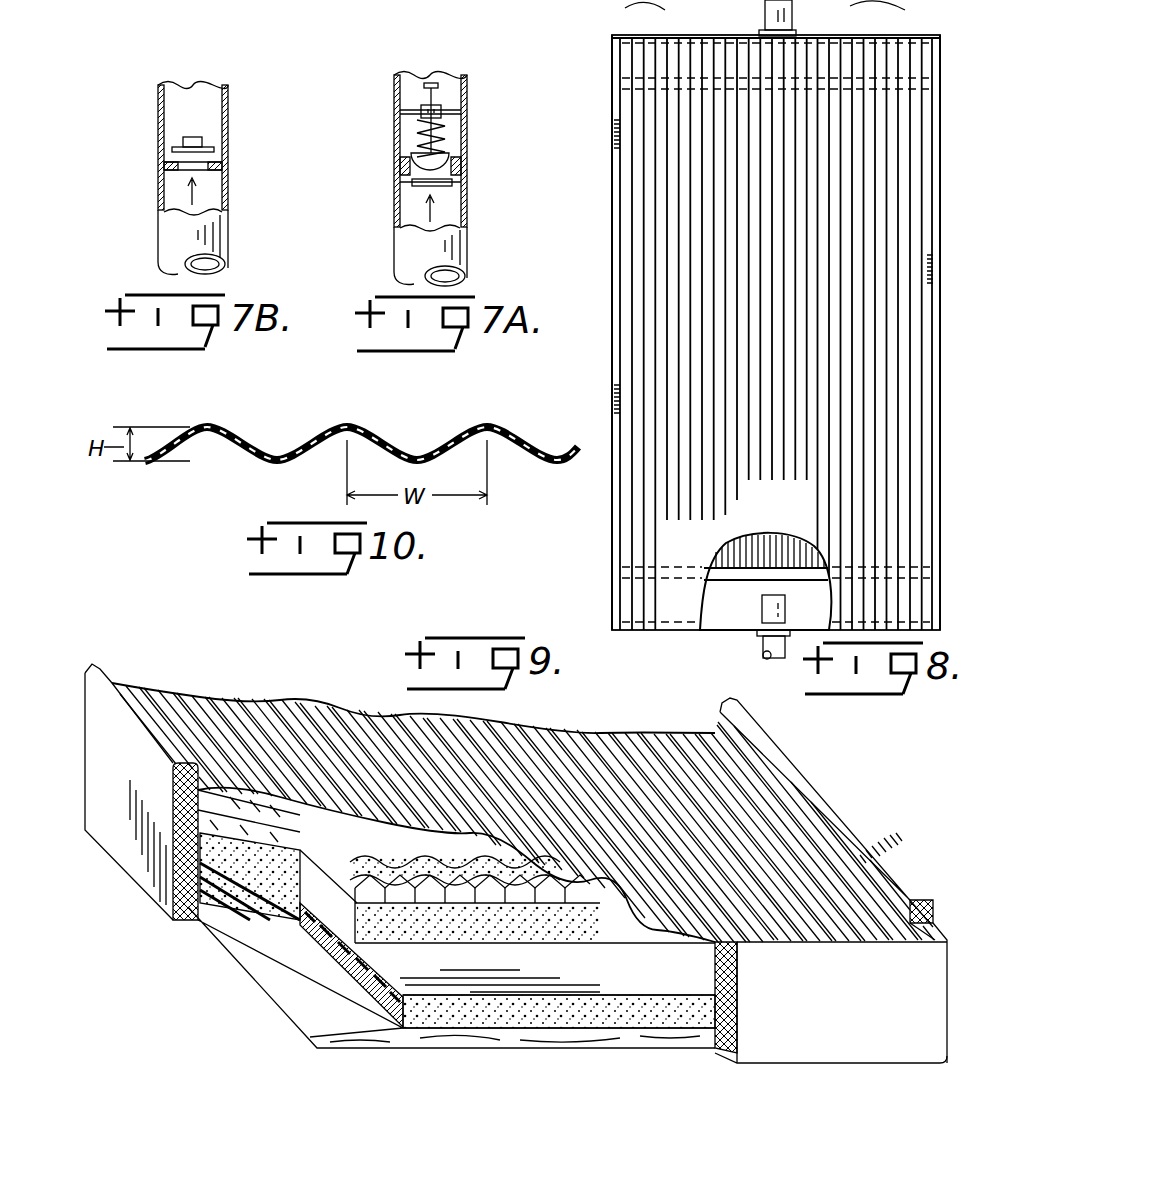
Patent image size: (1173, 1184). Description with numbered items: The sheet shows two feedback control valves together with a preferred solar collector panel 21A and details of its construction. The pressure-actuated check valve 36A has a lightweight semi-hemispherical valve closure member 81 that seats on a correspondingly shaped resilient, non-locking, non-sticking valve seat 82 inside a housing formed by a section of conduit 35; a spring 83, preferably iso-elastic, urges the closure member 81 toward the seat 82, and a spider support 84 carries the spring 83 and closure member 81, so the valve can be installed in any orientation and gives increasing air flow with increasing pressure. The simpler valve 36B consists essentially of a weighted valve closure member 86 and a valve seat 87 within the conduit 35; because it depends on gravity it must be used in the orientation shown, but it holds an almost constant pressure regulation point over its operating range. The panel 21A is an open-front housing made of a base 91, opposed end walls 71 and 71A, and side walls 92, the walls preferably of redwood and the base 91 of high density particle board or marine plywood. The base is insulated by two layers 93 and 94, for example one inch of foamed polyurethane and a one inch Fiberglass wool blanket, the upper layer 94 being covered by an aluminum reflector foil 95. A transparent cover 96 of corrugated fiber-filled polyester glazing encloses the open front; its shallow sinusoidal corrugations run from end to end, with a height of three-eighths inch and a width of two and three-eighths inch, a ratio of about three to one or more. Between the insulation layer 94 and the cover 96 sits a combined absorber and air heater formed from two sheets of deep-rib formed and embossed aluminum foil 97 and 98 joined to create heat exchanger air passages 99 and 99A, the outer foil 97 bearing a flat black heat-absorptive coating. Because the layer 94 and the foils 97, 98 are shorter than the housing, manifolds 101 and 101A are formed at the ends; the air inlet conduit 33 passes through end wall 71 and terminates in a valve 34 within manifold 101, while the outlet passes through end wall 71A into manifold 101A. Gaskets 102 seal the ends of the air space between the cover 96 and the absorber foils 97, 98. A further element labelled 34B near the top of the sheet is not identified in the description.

In FIG. 8, the solar collector panel 21A is at (612, 372).
In FIG. 9, the solar collector panel 21A is at (840, 780).
In FIG. 8, the air inlet conduit 33 is at (770, 658).
In FIG. 8, the valve 34 is at (765, 610).
In FIG. 8, the outlet duct 34B is at (804, 9).
In FIG. 7B, the conduit 35 is at (230, 242).
In FIG. 7A, the conduit 35 is at (467, 258).
In FIG. 7A, the pressure-actuated check valve 36A is at (392, 126).
In FIG. 7B, the feedback control valve 36B is at (152, 195).
In FIG. 8, the end wall 71 is at (716, 632).
In FIG. 9, the end wall 71 is at (937, 1010).
In FIG. 8, the end wall 71A is at (727, 12).
In FIG. 7A, the valve closure member 81 is at (412, 160).
In FIG. 7A, the valve seat 82 is at (400, 180).
In FIG. 7A, the spring 83 is at (447, 140).
In FIG. 7A, the spider support 84 is at (440, 105).
In FIG. 7B, the weighted valve closure member 86 is at (214, 148).
In FIG. 7B, the valve seat 87 is at (222, 174).
In FIG. 9, the base 91 is at (247, 970).
In FIG. 8, the side walls 92 is at (940, 357).
In FIG. 9, the side walls 92 is at (147, 867).
In FIG. 8, the insulation layer 93 is at (718, 605).
In FIG. 9, the insulation layer 93 is at (455, 1033).
In FIG. 9, the insulation layer 94 is at (377, 983).
In FIG. 9, the aluminum reflector foil 95 is at (343, 920).
In FIG. 10, the transparent cover 96 is at (352, 427).
In FIG. 8, the transparent cover 96 is at (917, 227).
In FIG. 9, the transparent cover 96 is at (823, 853).
In FIG. 8, the outer foil 97 is at (795, 545).
In FIG. 9, the outer foil 97 is at (540, 887).
In FIG. 9, the aluminum foil sheet 98 is at (522, 893).
In FIG. 9, the heat exchanger air passage 99 is at (550, 880).
In FIG. 9, the heat exchanger air passage 99A is at (558, 893).
In FIG. 8, the manifold 101 is at (740, 593).
In FIG. 9, the manifold 101 is at (667, 970).
In FIG. 8, the manifold 101A is at (645, 58).
In FIG. 8, the gaskets 102 is at (750, 570).
In FIG. 9, the gaskets 102 is at (483, 860).